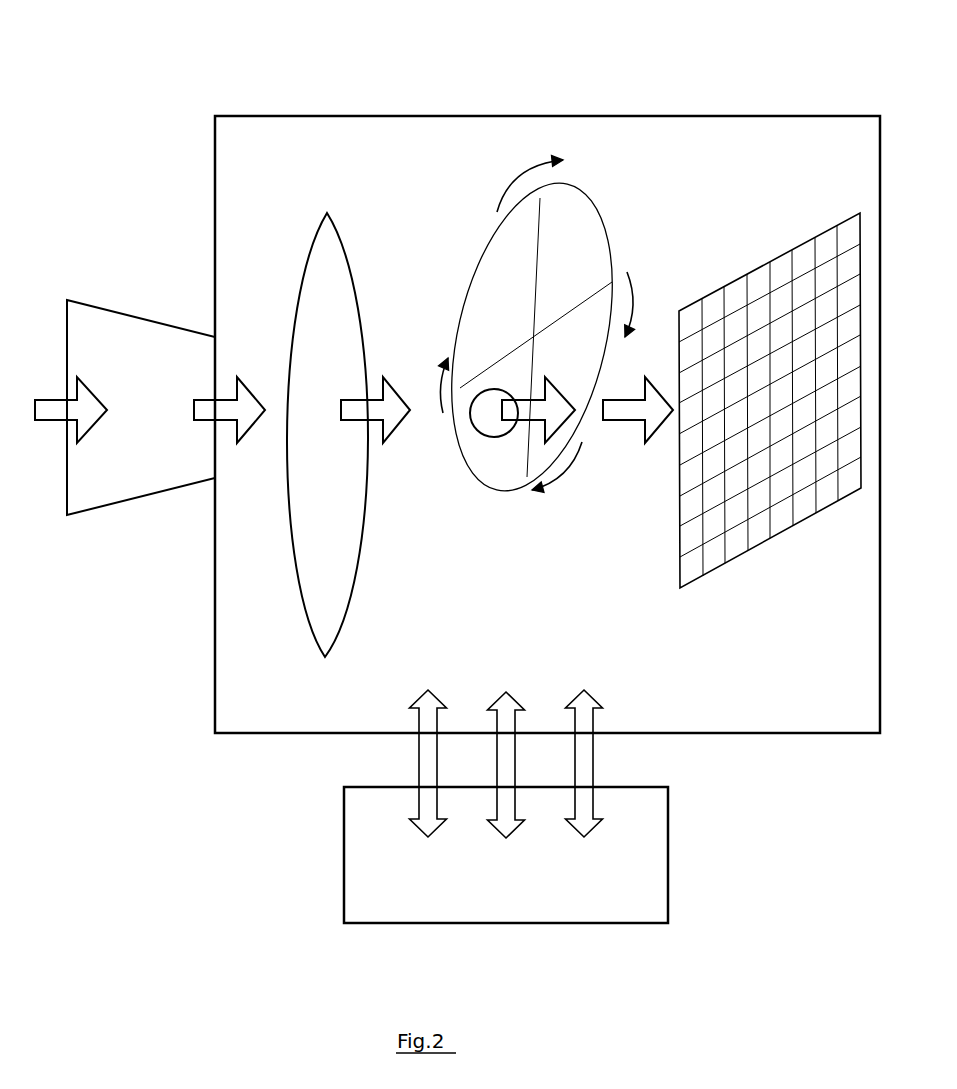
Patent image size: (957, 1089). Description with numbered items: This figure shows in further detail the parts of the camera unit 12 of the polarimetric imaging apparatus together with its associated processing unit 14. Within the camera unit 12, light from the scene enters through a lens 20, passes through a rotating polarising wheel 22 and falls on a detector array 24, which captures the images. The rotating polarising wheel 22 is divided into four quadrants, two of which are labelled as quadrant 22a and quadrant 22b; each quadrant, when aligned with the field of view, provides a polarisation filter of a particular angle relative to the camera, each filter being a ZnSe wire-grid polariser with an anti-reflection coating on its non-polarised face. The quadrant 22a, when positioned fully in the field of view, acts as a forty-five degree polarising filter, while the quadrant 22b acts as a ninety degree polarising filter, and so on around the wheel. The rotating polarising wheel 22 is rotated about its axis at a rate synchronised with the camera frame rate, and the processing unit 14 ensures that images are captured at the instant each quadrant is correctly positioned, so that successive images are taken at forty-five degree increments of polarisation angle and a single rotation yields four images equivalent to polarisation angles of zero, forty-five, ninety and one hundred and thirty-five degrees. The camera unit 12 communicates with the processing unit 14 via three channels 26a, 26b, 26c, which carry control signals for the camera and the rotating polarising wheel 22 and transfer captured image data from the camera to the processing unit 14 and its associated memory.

The camera unit 12 is at (365, 85).
The processing unit 14 is at (655, 875).
The lens 20 is at (343, 275).
The rotating polarising wheel 22 is at (593, 242).
The quadrant 22a is at (483, 455).
The quadrant 22b is at (488, 292).
The detector array 24 is at (757, 285).
The channel 26a is at (426, 708).
The channel 26b is at (509, 775).
The channel 26c is at (585, 725).